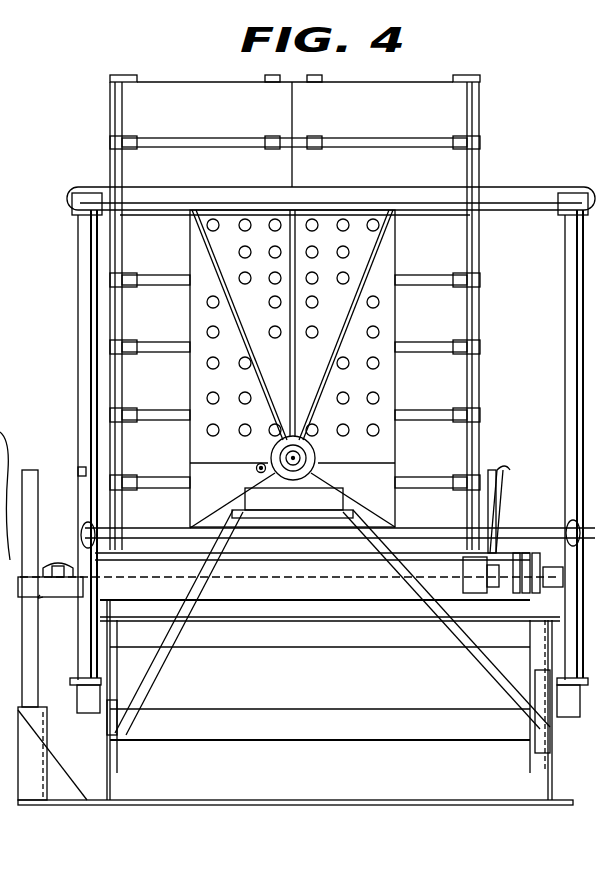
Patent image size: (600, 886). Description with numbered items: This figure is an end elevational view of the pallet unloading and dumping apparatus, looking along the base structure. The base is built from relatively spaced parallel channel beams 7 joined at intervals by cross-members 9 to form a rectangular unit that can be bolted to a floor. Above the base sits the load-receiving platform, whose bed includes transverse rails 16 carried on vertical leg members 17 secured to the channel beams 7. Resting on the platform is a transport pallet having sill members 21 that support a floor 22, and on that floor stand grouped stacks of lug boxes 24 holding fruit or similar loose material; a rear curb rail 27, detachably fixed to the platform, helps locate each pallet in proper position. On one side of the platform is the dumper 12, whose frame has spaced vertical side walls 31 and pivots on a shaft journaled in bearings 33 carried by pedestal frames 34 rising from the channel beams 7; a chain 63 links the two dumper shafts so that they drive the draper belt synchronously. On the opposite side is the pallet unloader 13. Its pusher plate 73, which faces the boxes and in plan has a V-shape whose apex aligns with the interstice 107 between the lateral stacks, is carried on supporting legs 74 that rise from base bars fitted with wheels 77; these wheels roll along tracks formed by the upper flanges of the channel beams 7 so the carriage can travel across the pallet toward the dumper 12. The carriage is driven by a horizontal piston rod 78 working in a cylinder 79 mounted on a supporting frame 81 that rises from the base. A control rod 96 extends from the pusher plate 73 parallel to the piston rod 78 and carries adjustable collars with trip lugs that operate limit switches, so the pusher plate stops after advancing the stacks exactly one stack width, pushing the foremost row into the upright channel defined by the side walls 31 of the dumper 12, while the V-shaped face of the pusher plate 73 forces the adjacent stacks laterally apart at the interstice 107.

The channel beam 7 is at (107, 745).
The cross-member 9 is at (332, 779).
The dumper 12 is at (509, 498).
The pallet unloader 13 is at (524, 181).
The transverse rail 16 is at (282, 608).
The vertical leg member 17 is at (540, 653).
The sill member 21 is at (237, 585).
The pallet floor 22 is at (307, 560).
The lug box 24 is at (464, 112).
The rear curb rail 27 is at (480, 580).
The side wall 31 is at (502, 480).
The bearing 33 is at (60, 565).
The pedestal frame 34 is at (55, 648).
The chain 63 is at (518, 553).
The pusher plate 73 is at (388, 258).
The supporting leg 74 is at (80, 338).
The wheel 77 is at (118, 700).
The piston rod 78 is at (312, 466).
The cylinder 79 is at (302, 455).
The supporting frame 81 is at (150, 668).
The control rod 96 is at (256, 468).
The interstice 107 is at (293, 113).